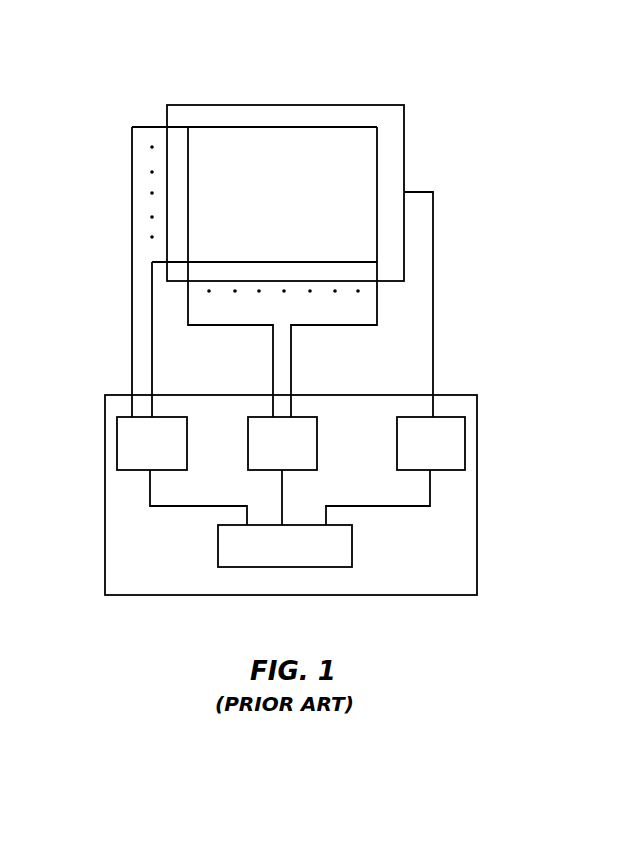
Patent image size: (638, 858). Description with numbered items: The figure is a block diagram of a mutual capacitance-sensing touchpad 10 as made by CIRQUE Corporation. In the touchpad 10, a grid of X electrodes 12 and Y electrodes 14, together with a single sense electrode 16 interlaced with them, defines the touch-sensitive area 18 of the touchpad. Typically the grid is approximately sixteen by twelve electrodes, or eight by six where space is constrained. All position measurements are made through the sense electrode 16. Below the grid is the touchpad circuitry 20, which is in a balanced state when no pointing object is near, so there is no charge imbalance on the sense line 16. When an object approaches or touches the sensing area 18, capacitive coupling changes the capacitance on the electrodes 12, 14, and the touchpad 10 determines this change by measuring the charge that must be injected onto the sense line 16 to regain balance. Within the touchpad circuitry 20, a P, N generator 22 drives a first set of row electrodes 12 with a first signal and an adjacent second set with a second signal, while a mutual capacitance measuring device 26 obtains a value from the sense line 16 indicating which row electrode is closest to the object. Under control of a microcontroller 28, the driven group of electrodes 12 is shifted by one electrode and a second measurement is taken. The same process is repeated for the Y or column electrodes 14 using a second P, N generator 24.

The touchpad 10 is at (386, 100).
The X electrodes 12 is at (143, 268).
The Y electrodes 14 is at (383, 342).
The sense electrode 16 is at (434, 210).
The touch-sensitive area 18 is at (497, 92).
The touchpad circuitry 20 is at (478, 505).
The P, N generator 22 is at (117, 437).
The P, N generator 24 is at (318, 443).
The mutual capacitance measuring device 26 is at (396, 448).
The microcontroller 28 is at (353, 542).